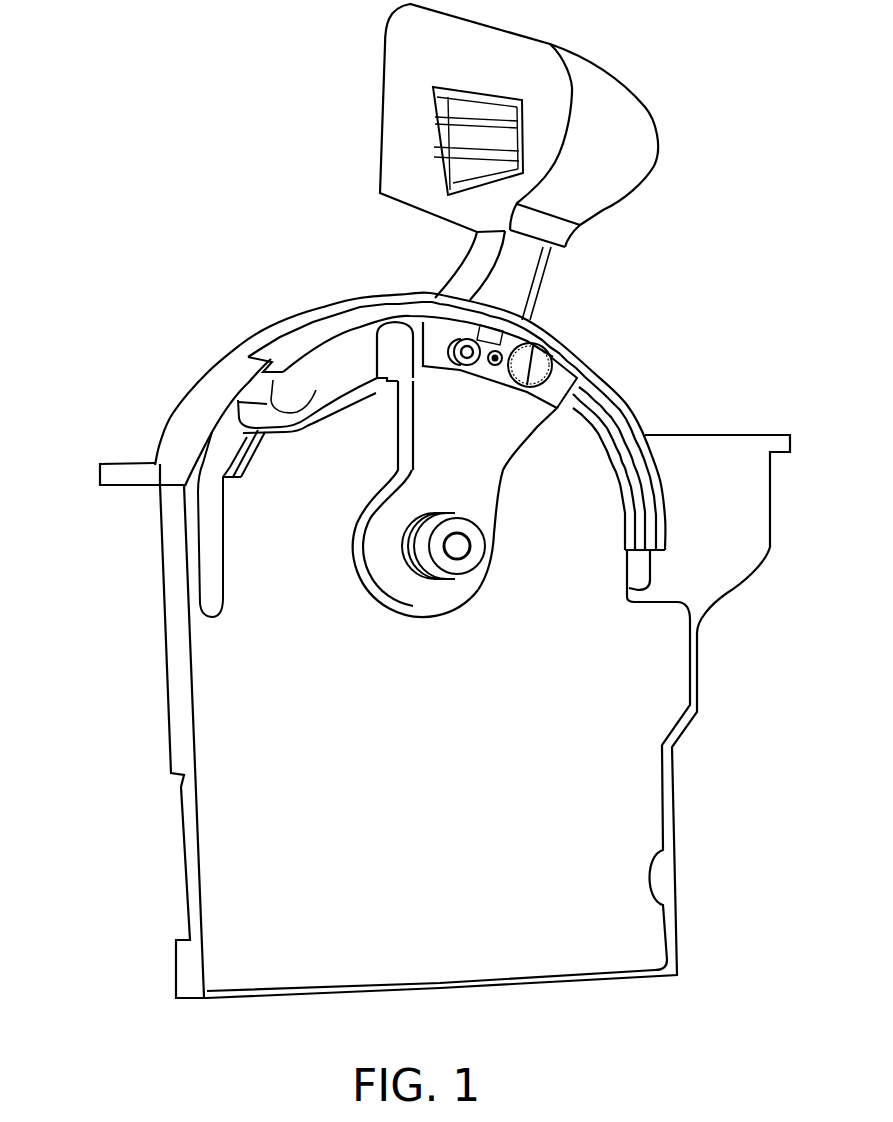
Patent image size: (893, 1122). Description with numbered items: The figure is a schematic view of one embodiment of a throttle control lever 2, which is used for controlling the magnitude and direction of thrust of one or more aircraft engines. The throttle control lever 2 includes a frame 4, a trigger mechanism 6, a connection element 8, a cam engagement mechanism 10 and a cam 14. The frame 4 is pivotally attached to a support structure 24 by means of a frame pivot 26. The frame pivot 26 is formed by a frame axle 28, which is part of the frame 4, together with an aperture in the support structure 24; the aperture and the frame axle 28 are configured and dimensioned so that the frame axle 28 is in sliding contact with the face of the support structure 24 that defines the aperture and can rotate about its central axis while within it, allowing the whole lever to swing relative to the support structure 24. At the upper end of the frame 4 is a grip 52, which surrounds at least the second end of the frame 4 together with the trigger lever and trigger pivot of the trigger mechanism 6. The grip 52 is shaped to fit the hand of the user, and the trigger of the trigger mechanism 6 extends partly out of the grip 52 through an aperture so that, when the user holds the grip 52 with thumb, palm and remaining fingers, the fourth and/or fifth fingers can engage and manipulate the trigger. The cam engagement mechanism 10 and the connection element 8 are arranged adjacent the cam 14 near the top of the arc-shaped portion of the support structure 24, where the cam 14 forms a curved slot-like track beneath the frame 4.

The throttle control lever 2 is at (642, 314).
The frame 4 is at (435, 428).
The trigger mechanism 6 is at (455, 136).
The connection element 8 is at (478, 335).
The cam engagement mechanism 10 is at (447, 340).
The cam 14 is at (333, 390).
The support structure 24 is at (658, 677).
The frame pivot 26 is at (387, 550).
The frame axle 28 is at (428, 555).
The grip 52 is at (652, 110).